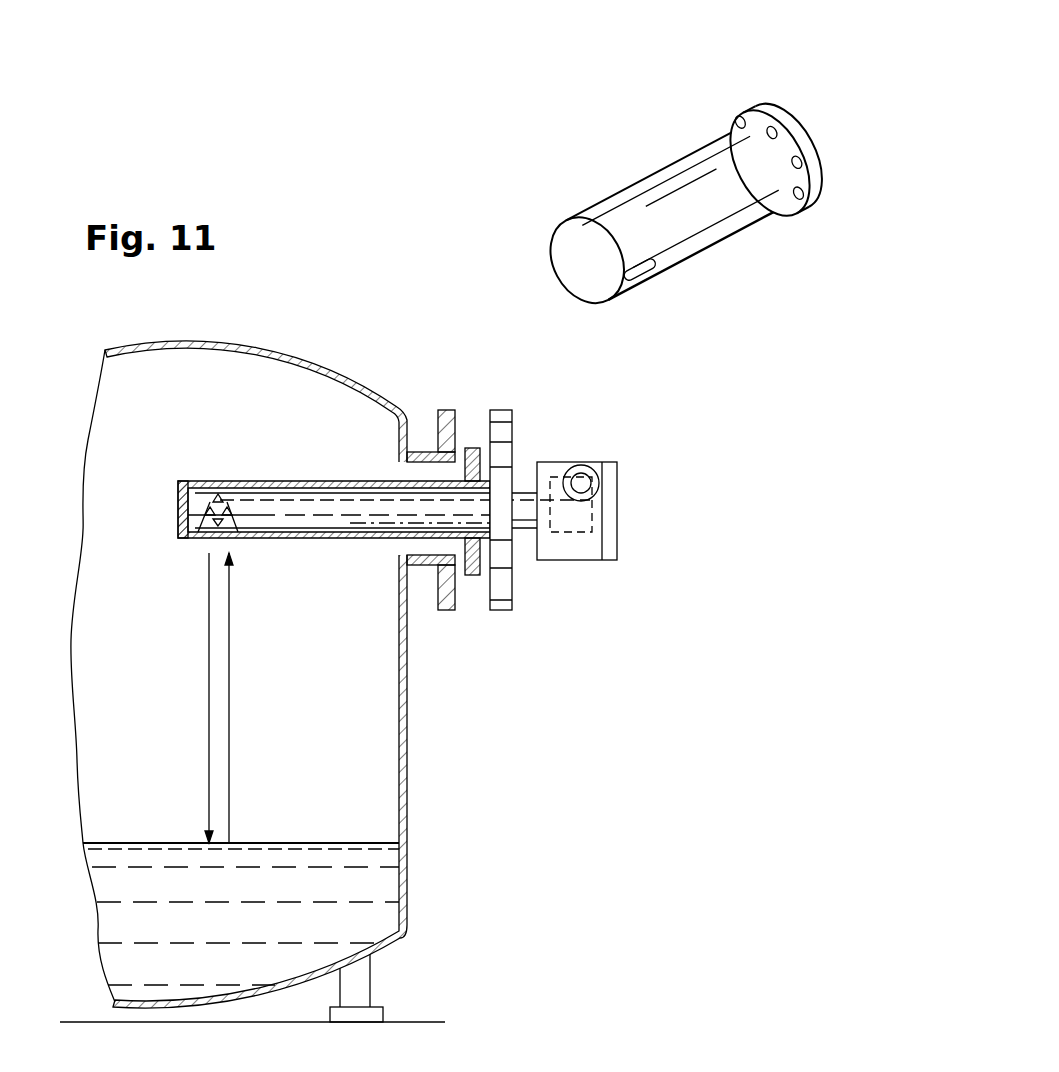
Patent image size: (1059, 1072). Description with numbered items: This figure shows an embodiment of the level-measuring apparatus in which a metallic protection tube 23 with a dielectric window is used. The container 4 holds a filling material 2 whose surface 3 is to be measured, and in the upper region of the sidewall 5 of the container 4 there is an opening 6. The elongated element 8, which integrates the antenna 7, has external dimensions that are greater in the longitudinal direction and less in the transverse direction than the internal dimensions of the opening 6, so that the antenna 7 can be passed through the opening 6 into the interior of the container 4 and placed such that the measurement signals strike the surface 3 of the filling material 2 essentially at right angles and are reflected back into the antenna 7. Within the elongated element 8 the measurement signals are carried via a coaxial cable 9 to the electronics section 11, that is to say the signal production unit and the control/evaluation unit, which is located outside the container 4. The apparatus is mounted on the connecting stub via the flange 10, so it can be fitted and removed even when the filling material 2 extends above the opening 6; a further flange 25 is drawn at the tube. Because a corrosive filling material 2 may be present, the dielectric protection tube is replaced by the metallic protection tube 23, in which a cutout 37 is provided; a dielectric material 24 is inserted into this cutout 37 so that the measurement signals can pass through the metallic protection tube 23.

The filling material 2 is at (367, 880).
The surface 3 is at (122, 842).
The container 4 is at (327, 762).
The sidewall 5 is at (410, 693).
The opening 6 is at (423, 549).
The antenna 7 is at (206, 511).
The elongated element 8 is at (255, 510).
The coaxial cable 9 is at (612, 208).
The flange 10 is at (500, 452).
The electronics section 11 is at (577, 518).
The metallic protection tube 23 is at (182, 482).
The dielectric material 24 is at (213, 540).
The tube flange 25 is at (476, 448).
The cutout 37 is at (662, 267).